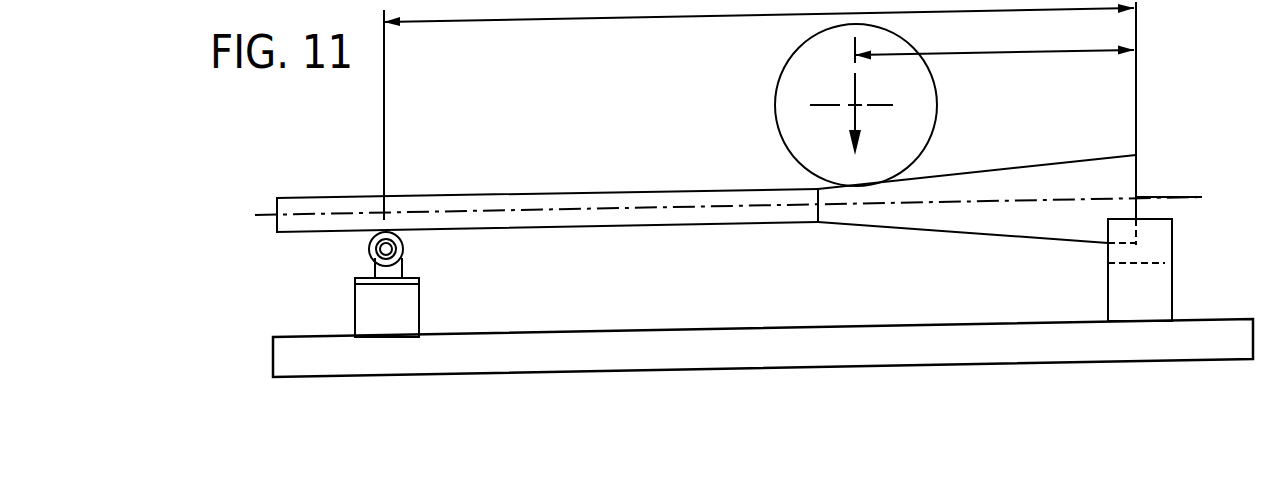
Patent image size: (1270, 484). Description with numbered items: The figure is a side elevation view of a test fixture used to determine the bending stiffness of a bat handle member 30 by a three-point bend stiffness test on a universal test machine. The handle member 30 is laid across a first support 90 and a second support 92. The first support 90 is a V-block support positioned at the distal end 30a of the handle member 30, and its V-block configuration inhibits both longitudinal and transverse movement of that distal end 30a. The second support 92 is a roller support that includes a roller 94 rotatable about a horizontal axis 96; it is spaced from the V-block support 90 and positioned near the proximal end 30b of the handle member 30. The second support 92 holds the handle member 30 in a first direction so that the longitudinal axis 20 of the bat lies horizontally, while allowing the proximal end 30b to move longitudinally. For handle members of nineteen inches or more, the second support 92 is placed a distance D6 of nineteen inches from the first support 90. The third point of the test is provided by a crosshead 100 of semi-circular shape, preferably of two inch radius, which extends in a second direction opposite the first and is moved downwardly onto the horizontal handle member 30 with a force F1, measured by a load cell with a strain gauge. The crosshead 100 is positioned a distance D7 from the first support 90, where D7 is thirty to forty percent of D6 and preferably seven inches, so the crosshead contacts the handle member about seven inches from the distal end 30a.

The handle member 30 is at (694, 220).
The distal end of handle member 30a is at (1137, 155).
The proximal end of handle member 30b is at (276, 208).
The longitudinal axis 20 is at (1170, 195).
The crosshead 100 is at (935, 135).
The first support 90 is at (1162, 291).
The second support 92 is at (408, 310).
The roller 94 is at (409, 255).
The horizontal axis 96 is at (375, 252).
The force F1 is at (857, 90).
The distance between supports D6 is at (760, 111).
The distance from first support to crosshead D7 is at (994, 71).